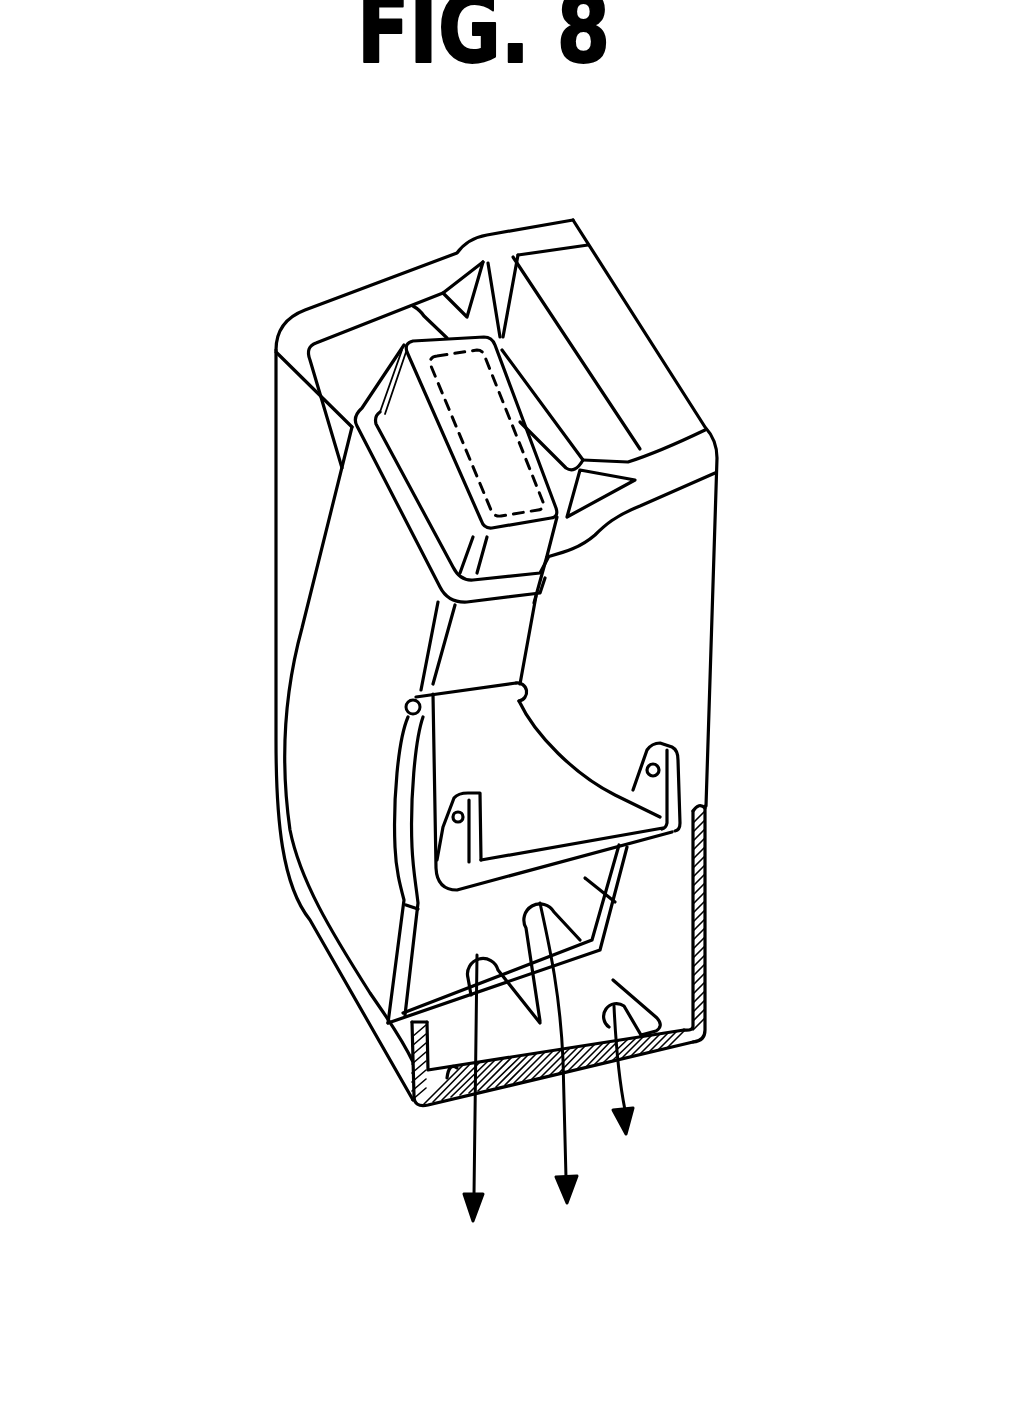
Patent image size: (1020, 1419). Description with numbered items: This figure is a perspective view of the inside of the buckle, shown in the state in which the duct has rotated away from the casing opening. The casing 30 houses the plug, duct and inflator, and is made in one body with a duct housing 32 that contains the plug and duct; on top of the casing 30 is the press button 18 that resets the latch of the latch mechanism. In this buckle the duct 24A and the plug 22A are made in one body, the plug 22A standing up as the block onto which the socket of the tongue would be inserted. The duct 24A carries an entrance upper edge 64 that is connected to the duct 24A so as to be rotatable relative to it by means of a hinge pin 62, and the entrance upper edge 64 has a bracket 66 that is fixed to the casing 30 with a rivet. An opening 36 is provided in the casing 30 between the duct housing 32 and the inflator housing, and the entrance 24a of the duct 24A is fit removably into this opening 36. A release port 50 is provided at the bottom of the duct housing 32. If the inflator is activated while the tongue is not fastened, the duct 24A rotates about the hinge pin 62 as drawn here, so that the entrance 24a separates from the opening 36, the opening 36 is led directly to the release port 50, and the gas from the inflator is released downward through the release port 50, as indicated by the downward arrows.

The press button 18 is at (631, 309).
The plug 22A is at (400, 372).
The duct 24A is at (323, 850).
The entrance 24a is at (690, 932).
The casing 30 is at (257, 457).
The duct housing 32 is at (295, 545).
The opening 36 is at (678, 963).
The release port 50 is at (454, 1087).
The hinge pin 62 is at (405, 707).
The entrance upper edge 64 is at (527, 740).
The bracket 66 is at (472, 828).